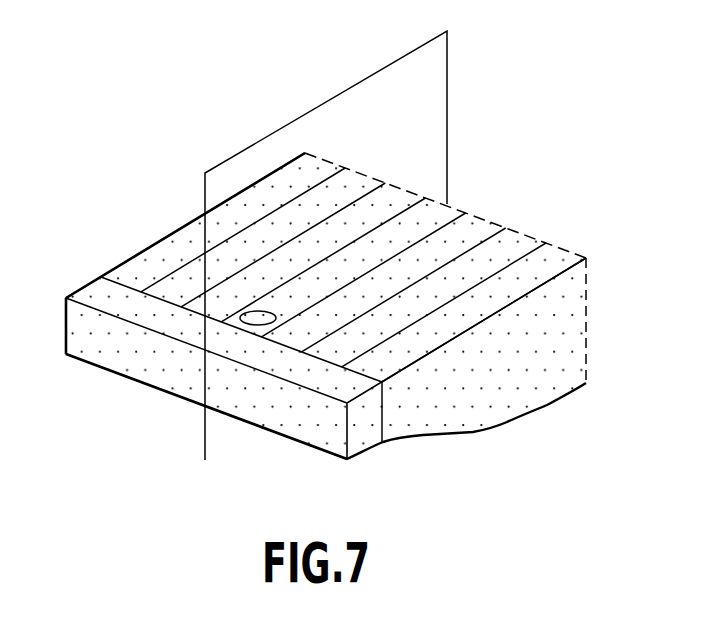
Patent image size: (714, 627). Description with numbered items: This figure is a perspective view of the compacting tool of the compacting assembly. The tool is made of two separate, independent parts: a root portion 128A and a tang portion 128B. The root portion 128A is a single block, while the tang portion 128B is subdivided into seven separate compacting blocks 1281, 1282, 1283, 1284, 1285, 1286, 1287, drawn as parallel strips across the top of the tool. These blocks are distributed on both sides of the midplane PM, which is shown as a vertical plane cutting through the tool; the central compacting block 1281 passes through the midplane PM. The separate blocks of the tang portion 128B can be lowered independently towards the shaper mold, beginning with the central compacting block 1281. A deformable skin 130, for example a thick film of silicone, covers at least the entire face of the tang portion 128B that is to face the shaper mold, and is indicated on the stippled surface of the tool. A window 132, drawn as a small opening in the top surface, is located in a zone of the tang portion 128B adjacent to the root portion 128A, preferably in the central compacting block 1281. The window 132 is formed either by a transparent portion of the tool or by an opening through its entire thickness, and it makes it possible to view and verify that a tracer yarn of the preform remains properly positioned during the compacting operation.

The deformable skin 130 is at (153, 263).
The window 132 is at (263, 317).
The root portion 128A is at (358, 423).
The tang portion 128B is at (472, 378).
The central compacting block 1281 is at (458, 220).
The compacting block 1282 is at (500, 237).
The compacting block 1283 is at (388, 198).
The compacting block 1284 is at (540, 247).
The compacting block 1285 is at (350, 183).
The compacting block 1286 is at (563, 255).
The compacting block 1287 is at (315, 172).
The midplane PM is at (447, 102).